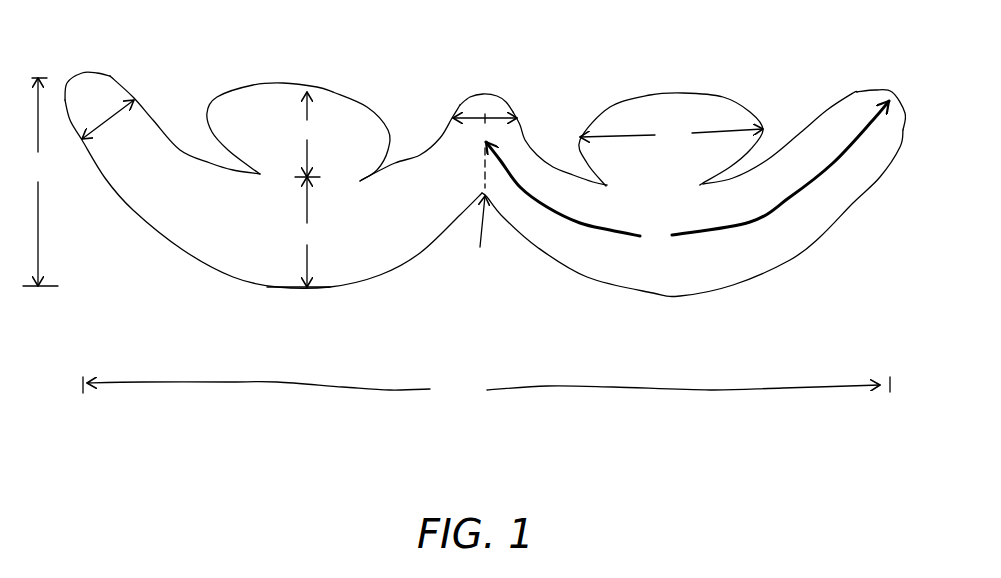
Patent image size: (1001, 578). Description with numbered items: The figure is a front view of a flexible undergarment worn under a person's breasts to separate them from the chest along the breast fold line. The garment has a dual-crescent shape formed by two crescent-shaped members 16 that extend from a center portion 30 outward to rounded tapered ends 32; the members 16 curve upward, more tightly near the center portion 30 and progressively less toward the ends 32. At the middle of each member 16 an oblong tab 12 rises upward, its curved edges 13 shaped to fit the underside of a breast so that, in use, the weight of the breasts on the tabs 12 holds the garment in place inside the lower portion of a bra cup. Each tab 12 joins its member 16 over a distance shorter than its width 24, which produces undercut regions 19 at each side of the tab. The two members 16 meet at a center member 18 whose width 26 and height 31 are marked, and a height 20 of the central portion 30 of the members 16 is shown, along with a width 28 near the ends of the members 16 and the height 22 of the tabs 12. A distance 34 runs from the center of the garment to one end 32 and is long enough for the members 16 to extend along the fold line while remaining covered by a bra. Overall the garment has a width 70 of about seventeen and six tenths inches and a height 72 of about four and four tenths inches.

The tabs 12 is at (252, 85).
The curved edges 13 is at (333, 92).
The crescent-shaped members 16 is at (237, 277).
The center member 18 is at (460, 105).
The undercut regions 19 is at (573, 166).
The height of the central portion 20 is at (298, 232).
The heights of the tabs 22 is at (308, 134).
The widths of the breast tabs 24 is at (671, 132).
The width of the center member 26 is at (503, 100).
The width near ends of the crescent members 28 is at (107, 123).
The center portion 30 is at (471, 90).
The height of the center member 31 is at (488, 91).
The tapered ends 32 is at (82, 73).
The distance from center to end 34 is at (687, 173).
The width of the garment 70 is at (486, 388).
The height of the garment 72 is at (39, 182).